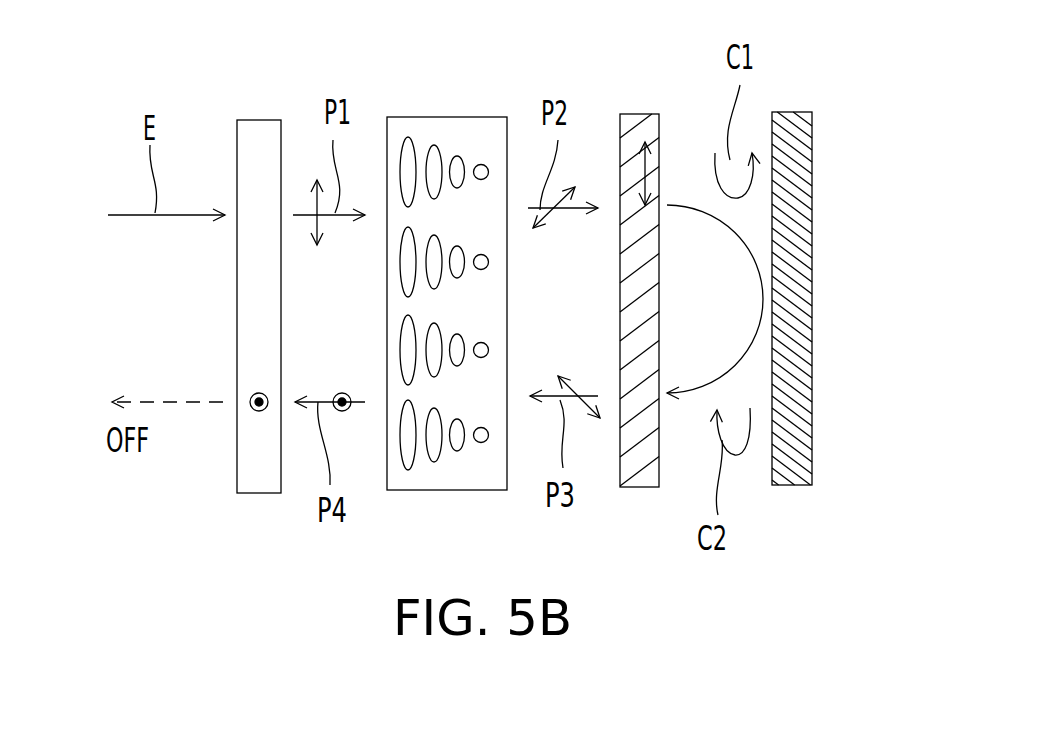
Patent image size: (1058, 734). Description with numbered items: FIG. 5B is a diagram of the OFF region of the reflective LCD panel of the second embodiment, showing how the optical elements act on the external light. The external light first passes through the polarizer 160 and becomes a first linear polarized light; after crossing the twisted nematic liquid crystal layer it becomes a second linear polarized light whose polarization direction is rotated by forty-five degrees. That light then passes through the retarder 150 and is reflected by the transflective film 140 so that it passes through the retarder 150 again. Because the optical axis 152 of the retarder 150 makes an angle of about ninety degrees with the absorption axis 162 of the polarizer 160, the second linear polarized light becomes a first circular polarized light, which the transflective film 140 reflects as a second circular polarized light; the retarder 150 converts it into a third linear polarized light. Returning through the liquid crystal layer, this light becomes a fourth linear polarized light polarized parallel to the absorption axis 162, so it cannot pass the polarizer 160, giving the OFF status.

The transflective film 140 is at (800, 475).
The retarder 150 is at (637, 465).
The optical axis 152 is at (648, 170).
The polarizer 160 is at (259, 470).
The absorption axis 162 is at (252, 412).